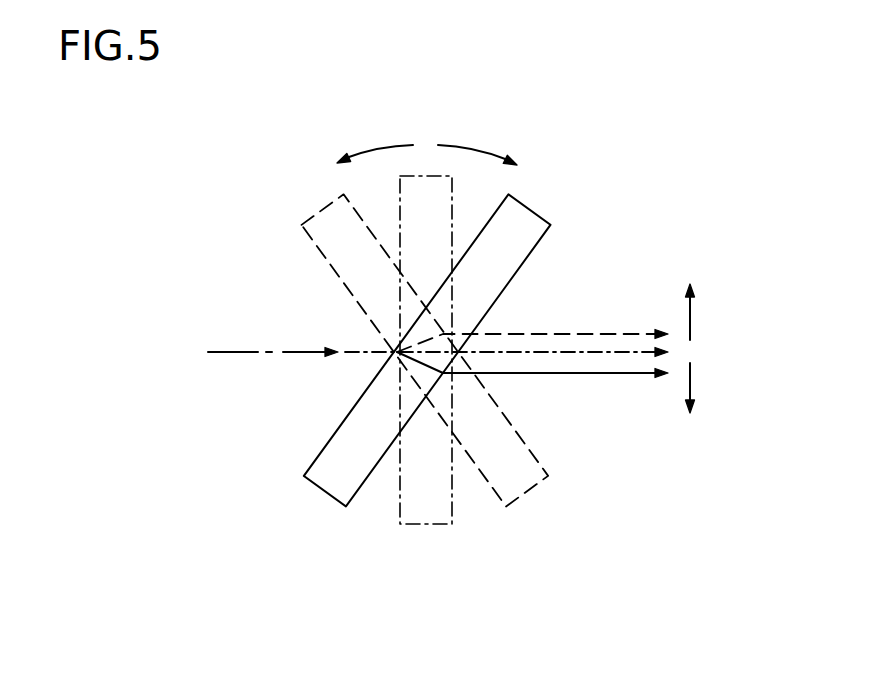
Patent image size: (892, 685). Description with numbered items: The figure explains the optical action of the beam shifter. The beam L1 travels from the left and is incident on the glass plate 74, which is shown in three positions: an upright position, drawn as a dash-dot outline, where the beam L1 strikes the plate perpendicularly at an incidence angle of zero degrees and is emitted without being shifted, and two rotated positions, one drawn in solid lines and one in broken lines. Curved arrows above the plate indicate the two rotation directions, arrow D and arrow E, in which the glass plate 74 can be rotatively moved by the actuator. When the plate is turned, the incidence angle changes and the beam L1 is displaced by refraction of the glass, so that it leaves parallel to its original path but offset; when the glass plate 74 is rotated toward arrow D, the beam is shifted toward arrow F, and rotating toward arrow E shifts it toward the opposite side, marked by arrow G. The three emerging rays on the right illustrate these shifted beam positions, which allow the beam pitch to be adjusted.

The glass plate 74 is at (423, 513).
The beam L1 is at (223, 352).
The arrow E is at (383, 148).
The arrow D is at (463, 148).
The arrow G is at (690, 315).
The arrow F is at (690, 387).